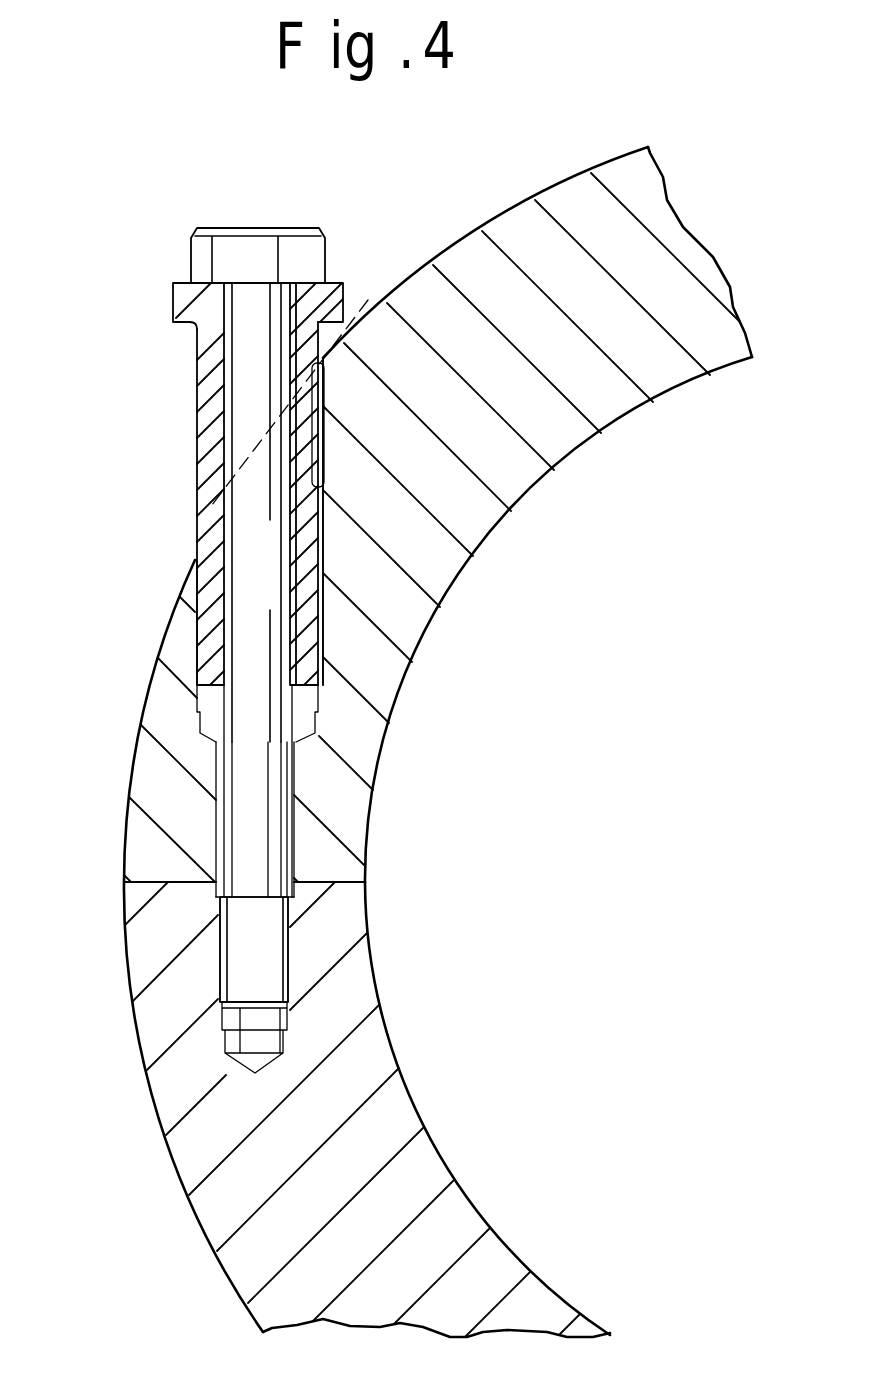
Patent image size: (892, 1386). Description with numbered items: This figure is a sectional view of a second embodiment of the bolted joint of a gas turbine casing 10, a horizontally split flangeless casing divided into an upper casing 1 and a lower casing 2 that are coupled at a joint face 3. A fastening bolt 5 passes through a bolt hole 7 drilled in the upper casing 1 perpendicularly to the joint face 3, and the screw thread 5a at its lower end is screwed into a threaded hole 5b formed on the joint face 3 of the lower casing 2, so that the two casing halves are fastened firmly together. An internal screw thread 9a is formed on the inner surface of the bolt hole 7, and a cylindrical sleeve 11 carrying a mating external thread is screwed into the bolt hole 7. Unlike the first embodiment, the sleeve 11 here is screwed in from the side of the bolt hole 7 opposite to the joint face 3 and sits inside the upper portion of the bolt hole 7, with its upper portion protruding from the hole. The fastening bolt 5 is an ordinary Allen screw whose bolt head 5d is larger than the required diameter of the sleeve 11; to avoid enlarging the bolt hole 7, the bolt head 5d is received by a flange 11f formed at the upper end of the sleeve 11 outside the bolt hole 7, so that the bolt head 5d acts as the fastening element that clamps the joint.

The upper casing 1 is at (558, 437).
The lower casing 2 is at (383, 1157).
The joint face 3 is at (152, 882).
The fastening bolt 5 is at (262, 803).
The screw thread 5a is at (287, 957).
The threaded hole 5b is at (254, 949).
The bolt head 5d is at (303, 262).
The bolt hole 7 is at (300, 381).
The internal screw thread 9a is at (350, 598).
The casing 10 is at (510, 198).
The cylindrical sleeve 11 is at (188, 405).
The flange 11f is at (183, 308).